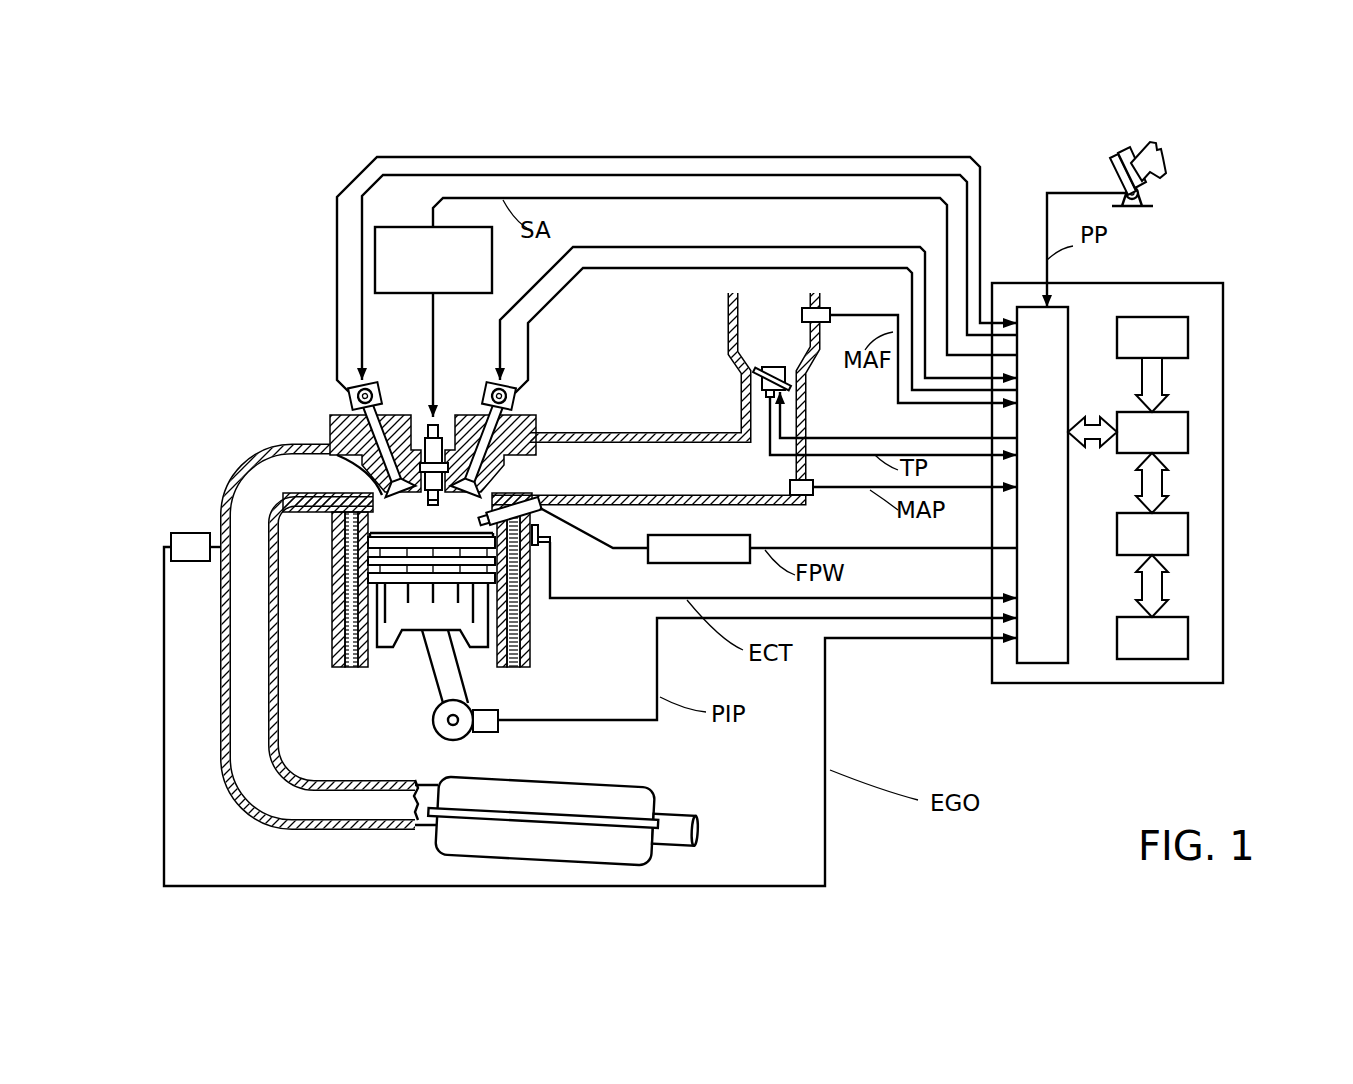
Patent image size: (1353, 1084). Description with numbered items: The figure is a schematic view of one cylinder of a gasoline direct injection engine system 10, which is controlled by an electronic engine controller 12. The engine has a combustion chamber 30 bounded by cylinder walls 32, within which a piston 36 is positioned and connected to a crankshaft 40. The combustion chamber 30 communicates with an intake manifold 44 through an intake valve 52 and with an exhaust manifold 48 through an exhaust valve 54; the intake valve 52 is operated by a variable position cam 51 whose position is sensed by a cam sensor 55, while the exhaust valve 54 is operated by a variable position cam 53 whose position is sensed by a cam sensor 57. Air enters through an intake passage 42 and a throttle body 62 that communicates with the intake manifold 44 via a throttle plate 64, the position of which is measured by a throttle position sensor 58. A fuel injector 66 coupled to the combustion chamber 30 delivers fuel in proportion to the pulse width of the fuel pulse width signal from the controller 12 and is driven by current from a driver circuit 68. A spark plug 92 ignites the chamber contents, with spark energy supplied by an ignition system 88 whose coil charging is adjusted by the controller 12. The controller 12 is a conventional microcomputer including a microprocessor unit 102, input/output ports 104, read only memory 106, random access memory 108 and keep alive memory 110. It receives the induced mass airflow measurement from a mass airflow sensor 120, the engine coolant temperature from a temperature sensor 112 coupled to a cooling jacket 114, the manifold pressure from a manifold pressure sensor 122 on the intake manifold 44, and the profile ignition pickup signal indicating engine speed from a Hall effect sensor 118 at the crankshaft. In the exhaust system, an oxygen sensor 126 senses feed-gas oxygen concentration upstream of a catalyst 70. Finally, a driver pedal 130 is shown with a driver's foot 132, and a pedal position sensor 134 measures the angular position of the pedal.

The gasoline direct injection engine system 10 is at (265, 372).
The electronic engine controller 12 is at (1213, 283).
The combustion chamber 30 is at (355, 613).
The cylinder walls 32 is at (373, 657).
The piston 36 is at (412, 614).
The crankshaft 40 is at (443, 738).
The intake passage 42 is at (788, 344).
The intake manifold 44 is at (723, 480).
The exhaust manifold 48 is at (315, 487).
The variable position cam 51 is at (492, 390).
The intake valve 52 is at (462, 480).
The variable position cam 53 is at (363, 388).
The exhaust valve 54 is at (340, 452).
The cam sensor 55 is at (517, 405).
The cam sensor 57 is at (352, 398).
The throttle position sensor 58 is at (760, 397).
The throttle body 62 is at (793, 375).
The throttle plate 64 is at (753, 377).
The fuel injector 66 is at (545, 520).
The driver circuit 68 is at (678, 565).
The catalyst 70 is at (613, 793).
The ignition system 88 is at (393, 228).
The spark plug 92 is at (437, 423).
The microprocessor unit 102 is at (1192, 428).
The input/output ports 104 is at (1095, 292).
The read only memory 106 is at (1192, 332).
The random access memory 108 is at (1192, 532).
The keep alive memory 110 is at (1192, 632).
The temperature sensor 112 is at (550, 545).
The cooling jacket 114 is at (523, 617).
The Hall effect sensor 118 is at (487, 732).
The mass airflow sensor 120 is at (830, 307).
The manifold pressure sensor 122 is at (810, 497).
The oxygen sensor 126 is at (172, 533).
The driver pedal 130 is at (1112, 170).
The driver's foot 132 is at (1163, 157).
The pedal position sensor 134 is at (1147, 192).